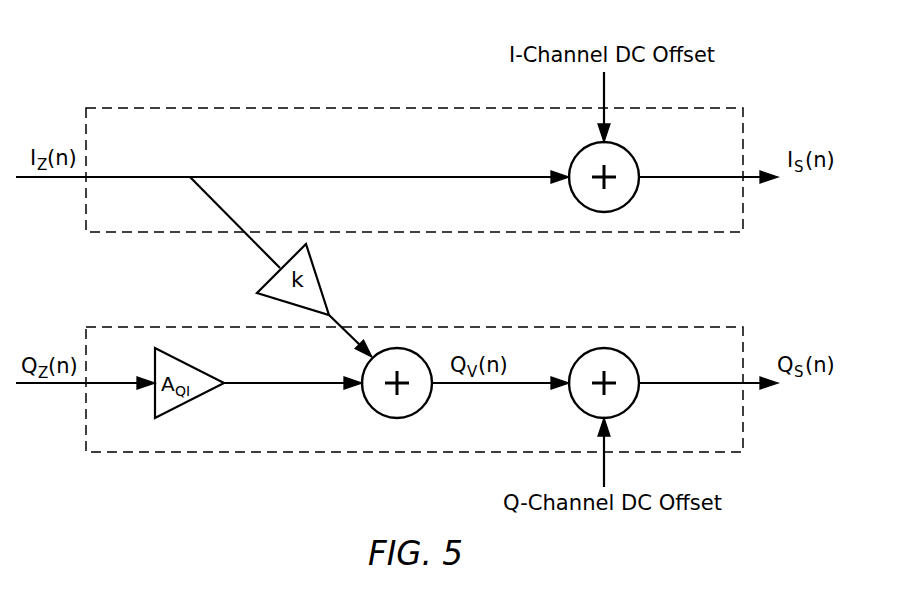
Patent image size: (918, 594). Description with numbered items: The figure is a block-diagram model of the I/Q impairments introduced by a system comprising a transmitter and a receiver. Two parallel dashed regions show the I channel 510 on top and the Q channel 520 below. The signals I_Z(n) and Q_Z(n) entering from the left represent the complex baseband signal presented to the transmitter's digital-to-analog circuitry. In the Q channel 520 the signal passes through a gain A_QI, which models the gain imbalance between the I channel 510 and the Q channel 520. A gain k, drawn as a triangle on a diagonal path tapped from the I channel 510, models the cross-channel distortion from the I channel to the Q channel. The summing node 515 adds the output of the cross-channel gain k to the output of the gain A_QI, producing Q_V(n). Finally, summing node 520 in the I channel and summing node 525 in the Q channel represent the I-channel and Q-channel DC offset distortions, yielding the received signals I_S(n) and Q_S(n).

The I channel 510 is at (223, 107).
The summing node 515 is at (392, 418).
The summing node 520 is at (584, 148).
The summing node 525 is at (571, 402).